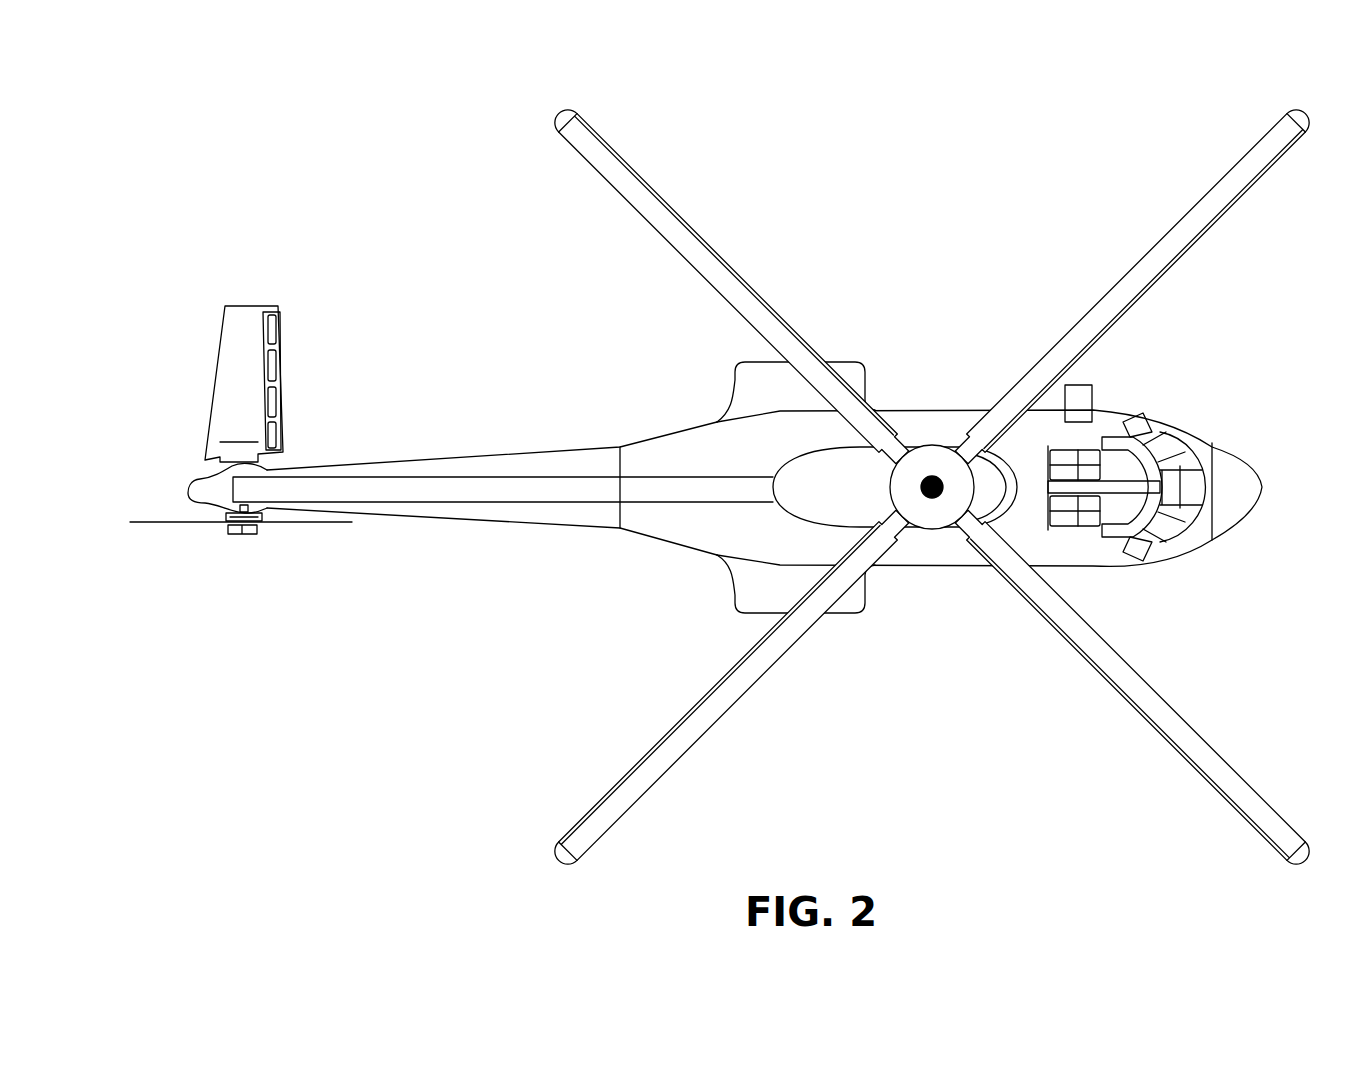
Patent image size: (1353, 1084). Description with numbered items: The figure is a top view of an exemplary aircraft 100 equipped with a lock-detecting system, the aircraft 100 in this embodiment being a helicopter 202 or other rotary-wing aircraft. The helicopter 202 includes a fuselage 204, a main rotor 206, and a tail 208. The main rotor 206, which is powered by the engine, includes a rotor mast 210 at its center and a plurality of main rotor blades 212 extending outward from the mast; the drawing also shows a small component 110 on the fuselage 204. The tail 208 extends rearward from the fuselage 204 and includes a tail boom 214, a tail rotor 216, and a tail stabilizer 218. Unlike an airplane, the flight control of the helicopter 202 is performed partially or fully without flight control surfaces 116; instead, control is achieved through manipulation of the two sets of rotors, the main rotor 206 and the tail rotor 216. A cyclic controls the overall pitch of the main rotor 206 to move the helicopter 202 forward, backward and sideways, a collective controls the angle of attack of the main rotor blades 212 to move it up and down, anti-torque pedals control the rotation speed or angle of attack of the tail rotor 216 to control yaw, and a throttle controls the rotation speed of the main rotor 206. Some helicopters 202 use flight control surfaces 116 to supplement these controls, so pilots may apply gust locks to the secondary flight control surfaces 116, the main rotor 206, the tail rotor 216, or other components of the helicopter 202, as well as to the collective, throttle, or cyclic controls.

The aircraft 100 is at (703, 471).
The sensor 110 is at (1092, 385).
The flight control surfaces 116 is at (172, 388).
The helicopter 202 is at (934, 486).
The fuselage 204 is at (660, 546).
The main rotor 206 is at (988, 689).
The tail 208 is at (430, 423).
The rotor mast 210 is at (926, 478).
The main rotor blades 212 is at (625, 172).
The tail boom 214 is at (396, 510).
The tail rotor 216 is at (236, 536).
The tail stabilizer 218 is at (245, 322).